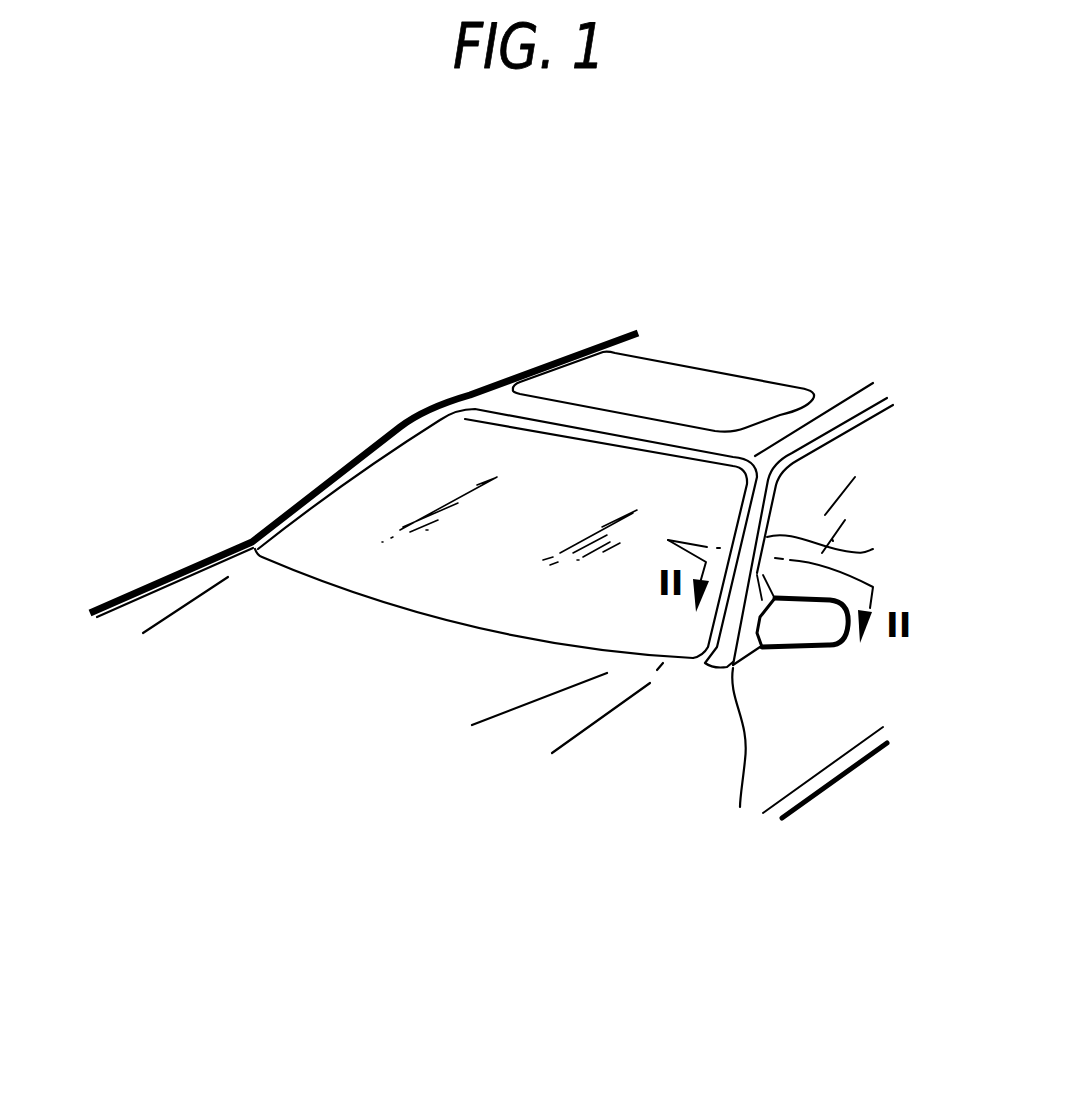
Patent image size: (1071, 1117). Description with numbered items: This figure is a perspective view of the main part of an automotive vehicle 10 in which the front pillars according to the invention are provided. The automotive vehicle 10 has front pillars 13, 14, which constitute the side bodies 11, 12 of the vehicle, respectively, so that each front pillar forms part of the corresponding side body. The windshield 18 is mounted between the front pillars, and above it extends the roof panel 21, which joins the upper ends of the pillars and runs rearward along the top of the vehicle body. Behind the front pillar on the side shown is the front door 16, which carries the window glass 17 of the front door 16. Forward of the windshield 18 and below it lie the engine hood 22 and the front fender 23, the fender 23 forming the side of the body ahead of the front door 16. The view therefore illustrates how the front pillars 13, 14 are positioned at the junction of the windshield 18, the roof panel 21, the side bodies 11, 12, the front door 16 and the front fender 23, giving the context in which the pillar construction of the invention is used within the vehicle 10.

The automotive vehicle 10 is at (390, 265).
The side body 11 is at (838, 497).
The side body 12 is at (388, 400).
The front pillar 13 is at (833, 602).
The front pillar 14 is at (343, 466).
The front door 16 is at (767, 760).
The window glass 17 is at (824, 467).
The windshield 18 is at (355, 536).
The roof panel 21 is at (495, 398).
The engine hood 22 is at (406, 670).
The front fender 23 is at (658, 753).